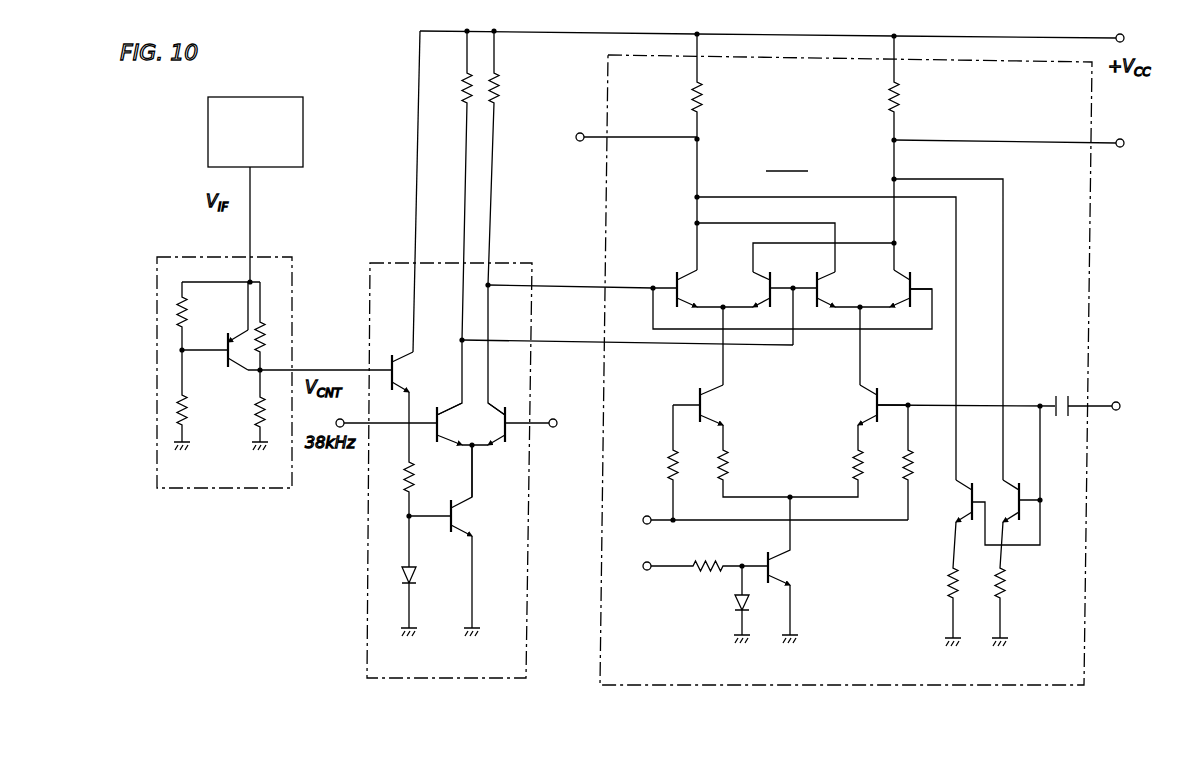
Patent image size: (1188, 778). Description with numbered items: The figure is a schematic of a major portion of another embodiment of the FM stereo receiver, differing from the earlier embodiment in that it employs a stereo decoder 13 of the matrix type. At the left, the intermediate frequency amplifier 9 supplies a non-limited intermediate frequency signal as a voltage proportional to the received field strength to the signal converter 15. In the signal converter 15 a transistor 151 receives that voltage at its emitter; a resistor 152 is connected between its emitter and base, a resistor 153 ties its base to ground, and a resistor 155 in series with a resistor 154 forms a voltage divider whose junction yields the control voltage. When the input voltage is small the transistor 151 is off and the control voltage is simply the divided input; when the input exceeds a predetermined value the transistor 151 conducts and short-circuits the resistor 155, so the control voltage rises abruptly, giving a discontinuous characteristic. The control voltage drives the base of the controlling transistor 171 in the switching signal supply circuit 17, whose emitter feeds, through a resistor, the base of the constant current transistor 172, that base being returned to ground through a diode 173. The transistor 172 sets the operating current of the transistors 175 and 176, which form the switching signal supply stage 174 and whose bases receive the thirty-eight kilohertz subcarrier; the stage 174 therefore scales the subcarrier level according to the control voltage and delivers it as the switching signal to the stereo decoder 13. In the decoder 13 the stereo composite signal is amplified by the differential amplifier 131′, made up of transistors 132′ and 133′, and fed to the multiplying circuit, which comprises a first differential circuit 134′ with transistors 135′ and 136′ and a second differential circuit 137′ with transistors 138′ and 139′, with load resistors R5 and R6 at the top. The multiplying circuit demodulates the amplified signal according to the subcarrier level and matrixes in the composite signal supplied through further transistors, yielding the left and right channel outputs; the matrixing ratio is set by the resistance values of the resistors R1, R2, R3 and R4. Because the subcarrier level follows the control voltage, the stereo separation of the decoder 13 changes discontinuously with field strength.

The intermediate frequency amplifier 9 is at (303, 98).
The signal converter 15 is at (283, 257).
The switching signal supply circuit 17 is at (370, 292).
The stereo decoder 13 is at (1088, 250).
The transistor 151 is at (226, 362).
The resistor 152 is at (186, 318).
The resistor 153 is at (186, 422).
The resistor 154 is at (256, 400).
The resistor 155 is at (264, 325).
The controlling transistor 171 is at (391, 385).
The constant current transistor 172 is at (450, 530).
The diode 173 is at (413, 585).
The switching signal supply stage 174 is at (486, 433).
The transistor 175 is at (436, 406).
The transistor 176 is at (506, 446).
The differential amplifier 131′ is at (812, 437).
The transistor 132′ is at (697, 392).
The transistor 133′ is at (880, 392).
The first differential circuit 134′ is at (742, 294).
The transistor 135′ is at (672, 278).
The transistor 136′ is at (774, 278).
The second differential circuit 137′ is at (885, 296).
The transistor 138′ is at (820, 305).
The transistor 139′ is at (912, 280).
The resistor R1 is at (1008, 578).
The resistor R2 is at (950, 578).
The resistor R3 is at (730, 462).
The resistor R4 is at (853, 466).
The resistor R5 is at (703, 98).
The resistor R6 is at (900, 100).